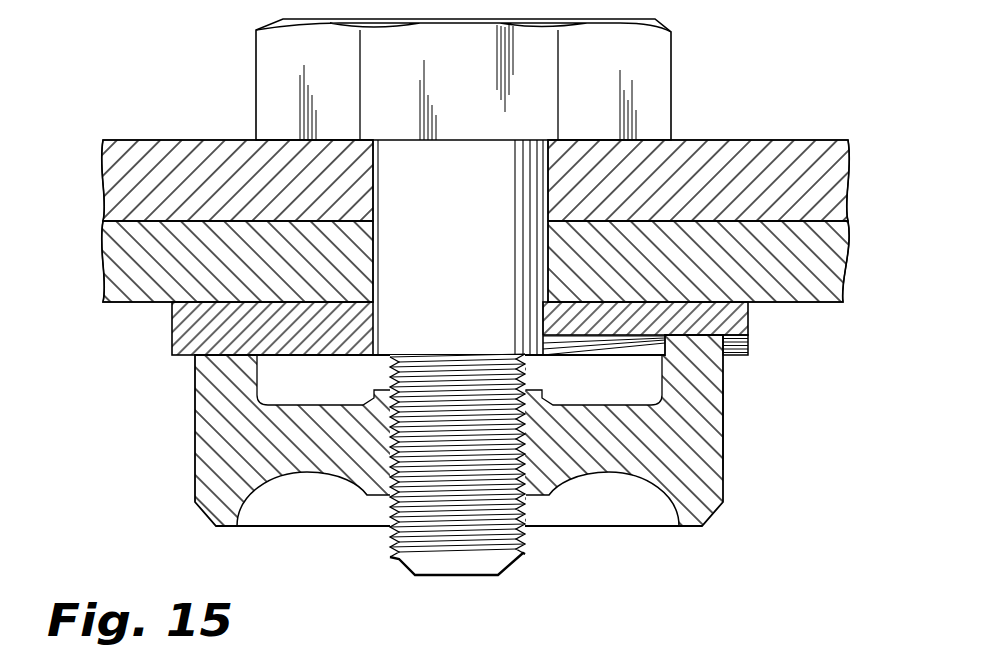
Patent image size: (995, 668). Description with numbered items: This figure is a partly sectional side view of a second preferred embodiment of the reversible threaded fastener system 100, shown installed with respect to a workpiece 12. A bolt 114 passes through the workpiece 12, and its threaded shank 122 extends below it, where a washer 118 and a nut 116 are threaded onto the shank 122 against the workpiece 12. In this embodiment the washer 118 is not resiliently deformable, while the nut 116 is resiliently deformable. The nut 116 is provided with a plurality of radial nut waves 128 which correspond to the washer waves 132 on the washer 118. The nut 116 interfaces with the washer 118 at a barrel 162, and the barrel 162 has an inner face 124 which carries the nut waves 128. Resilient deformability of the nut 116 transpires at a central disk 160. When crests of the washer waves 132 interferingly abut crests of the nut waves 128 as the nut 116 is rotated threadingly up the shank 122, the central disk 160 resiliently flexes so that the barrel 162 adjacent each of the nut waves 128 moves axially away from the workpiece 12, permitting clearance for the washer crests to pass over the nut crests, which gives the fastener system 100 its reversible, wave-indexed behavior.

The workpiece 12 is at (857, 212).
The reversible threaded fastener system 100 is at (452, 480).
The bolt 114 is at (535, 331).
The nut 116 is at (729, 493).
The washer 118 is at (172, 329).
The shank 122 is at (480, 577).
The inner face 124 is at (692, 335).
The nut waves 128 is at (713, 336).
The washer waves 132 is at (227, 357).
The central disk 160 is at (588, 485).
The barrel 162 is at (725, 435).